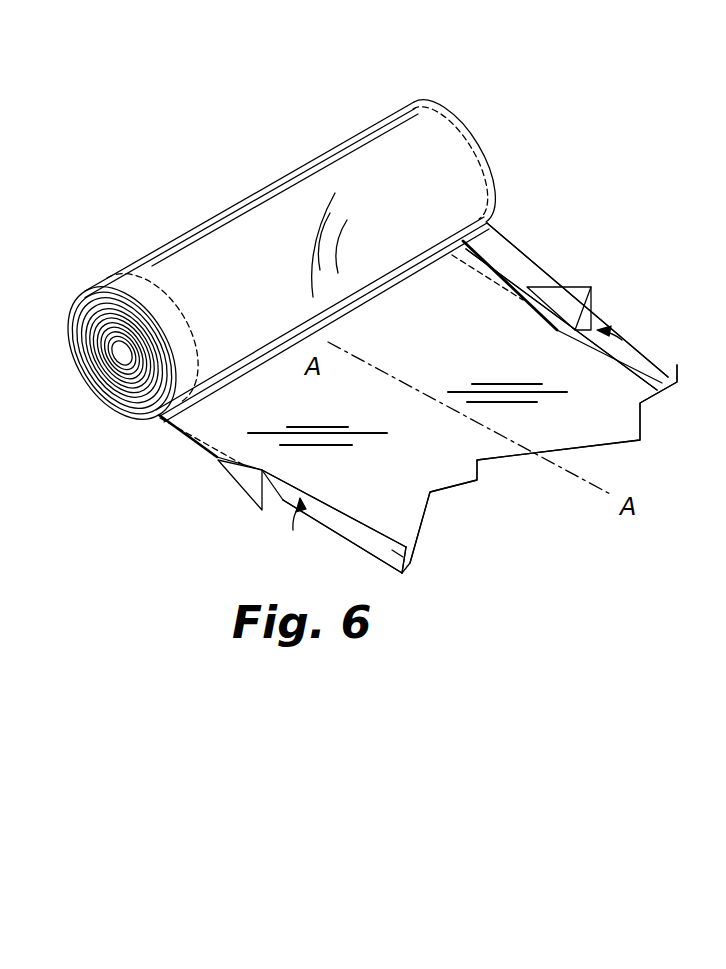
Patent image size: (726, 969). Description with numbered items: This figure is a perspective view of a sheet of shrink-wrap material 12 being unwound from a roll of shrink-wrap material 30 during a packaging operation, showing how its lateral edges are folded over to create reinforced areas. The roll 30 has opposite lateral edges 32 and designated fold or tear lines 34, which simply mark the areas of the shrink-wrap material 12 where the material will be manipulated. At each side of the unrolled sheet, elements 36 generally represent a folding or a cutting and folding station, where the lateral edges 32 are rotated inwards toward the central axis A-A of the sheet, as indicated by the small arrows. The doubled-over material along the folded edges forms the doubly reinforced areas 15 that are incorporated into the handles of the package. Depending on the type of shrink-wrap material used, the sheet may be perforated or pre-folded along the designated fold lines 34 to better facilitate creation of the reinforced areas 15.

The roll of shrink-wrap material 30 is at (470, 122).
The shrink-wrap material 12 is at (472, 287).
The lateral edges 32 is at (480, 242).
The fold or tear lines 34 is at (207, 441).
The folding or cutting and folding station 36 is at (245, 495).
The reinforced areas 15 is at (410, 563).